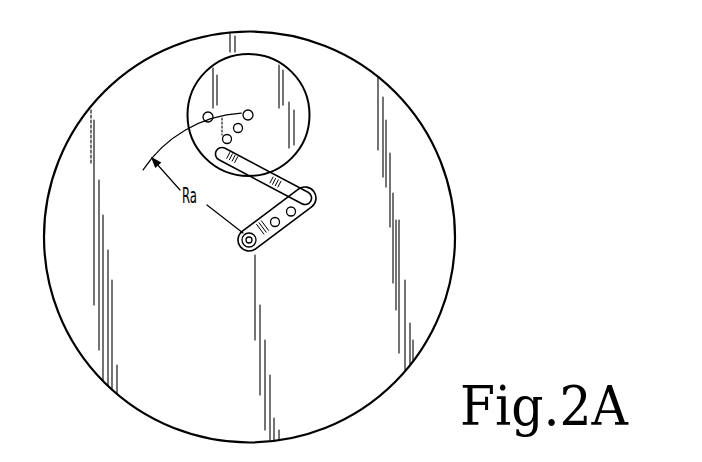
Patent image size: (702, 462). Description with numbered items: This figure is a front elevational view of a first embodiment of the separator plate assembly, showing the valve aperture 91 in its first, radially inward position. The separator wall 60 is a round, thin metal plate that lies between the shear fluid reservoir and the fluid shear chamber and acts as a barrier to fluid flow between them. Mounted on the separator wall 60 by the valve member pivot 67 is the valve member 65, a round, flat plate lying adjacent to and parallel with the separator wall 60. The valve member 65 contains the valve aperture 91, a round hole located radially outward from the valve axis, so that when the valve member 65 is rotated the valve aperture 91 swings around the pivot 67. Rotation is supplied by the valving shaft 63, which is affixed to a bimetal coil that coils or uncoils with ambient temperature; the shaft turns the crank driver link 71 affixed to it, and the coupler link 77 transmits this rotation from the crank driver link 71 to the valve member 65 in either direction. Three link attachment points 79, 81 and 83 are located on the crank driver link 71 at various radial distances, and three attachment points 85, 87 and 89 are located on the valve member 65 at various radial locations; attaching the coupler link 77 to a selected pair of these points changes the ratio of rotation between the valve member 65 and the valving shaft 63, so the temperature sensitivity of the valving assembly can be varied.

The separator wall 60 is at (185, 355).
The valve member 65 is at (272, 81).
The valve member pivot 67 is at (253, 113).
The attachment point 89 is at (253, 127).
The attachment point 87 is at (242, 140).
The attachment point 85 is at (237, 153).
The coupler link 77 is at (265, 186).
The link attachment point 83 is at (327, 208).
The link attachment point 79 is at (277, 240).
The link attachment point 81 is at (300, 230).
The valving shaft 63 is at (245, 248).
The crank driver link 71 is at (238, 243).
The valve aperture 91 is at (200, 107).